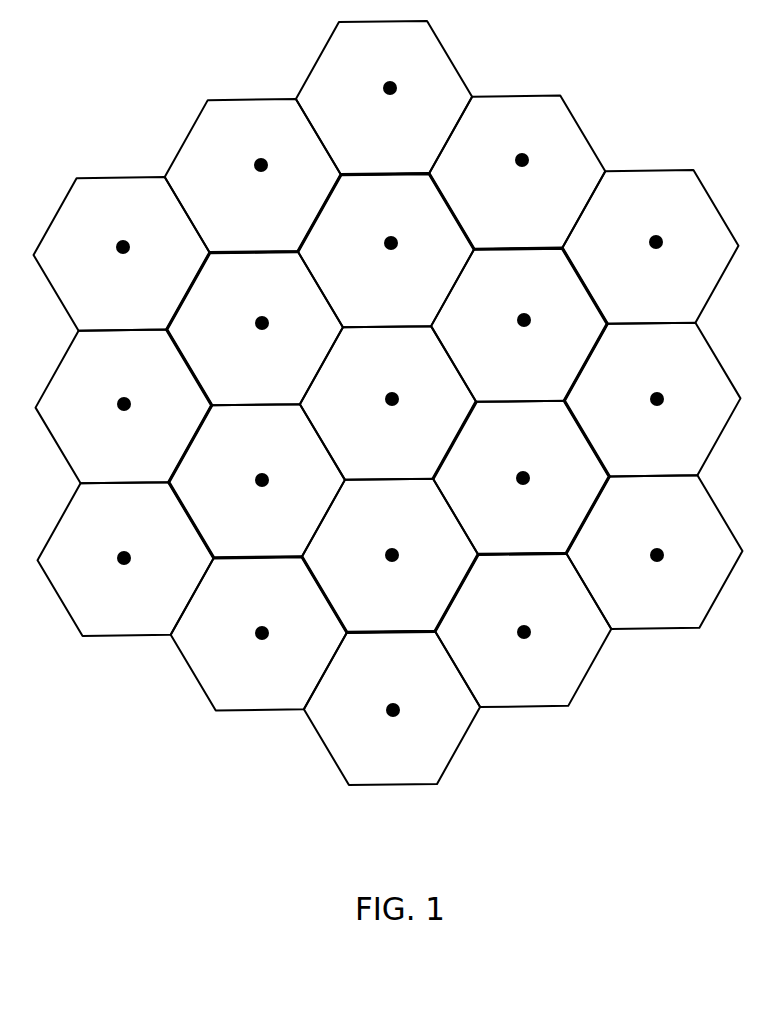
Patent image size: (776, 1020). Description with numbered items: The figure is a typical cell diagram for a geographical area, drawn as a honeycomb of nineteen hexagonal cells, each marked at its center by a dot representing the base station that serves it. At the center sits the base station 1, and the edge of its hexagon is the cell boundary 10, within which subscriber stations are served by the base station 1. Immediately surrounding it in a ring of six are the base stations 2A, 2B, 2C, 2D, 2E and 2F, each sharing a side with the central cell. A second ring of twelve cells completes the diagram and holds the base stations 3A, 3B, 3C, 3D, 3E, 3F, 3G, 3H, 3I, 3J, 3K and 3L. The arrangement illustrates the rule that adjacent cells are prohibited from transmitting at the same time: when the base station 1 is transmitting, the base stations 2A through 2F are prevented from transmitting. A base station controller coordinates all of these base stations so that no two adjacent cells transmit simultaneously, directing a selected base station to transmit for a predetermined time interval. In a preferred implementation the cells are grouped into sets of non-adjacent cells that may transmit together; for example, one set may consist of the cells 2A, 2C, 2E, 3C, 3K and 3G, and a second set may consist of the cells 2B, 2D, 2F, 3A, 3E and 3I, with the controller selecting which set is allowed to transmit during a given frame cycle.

The base station 1 is at (392, 392).
The cell boundary 10 is at (452, 357).
The base station 2A is at (524, 313).
The base station 2B is at (391, 236).
The base station 2C is at (262, 316).
The base station 2D is at (262, 473).
The base station 2E is at (392, 548).
The base station 2F is at (523, 471).
The base station 3A is at (393, 703).
The base station 3B is at (524, 625).
The base station 3C is at (657, 548).
The base station 3D is at (657, 392).
The base station 3E is at (656, 235).
The base station 3F is at (522, 153).
The base station 3G is at (390, 81).
The base station 3H is at (261, 158).
The base station 3I is at (123, 240).
The base station 3J is at (124, 397).
The base station 3K is at (124, 551).
The base station 3L is at (262, 626).